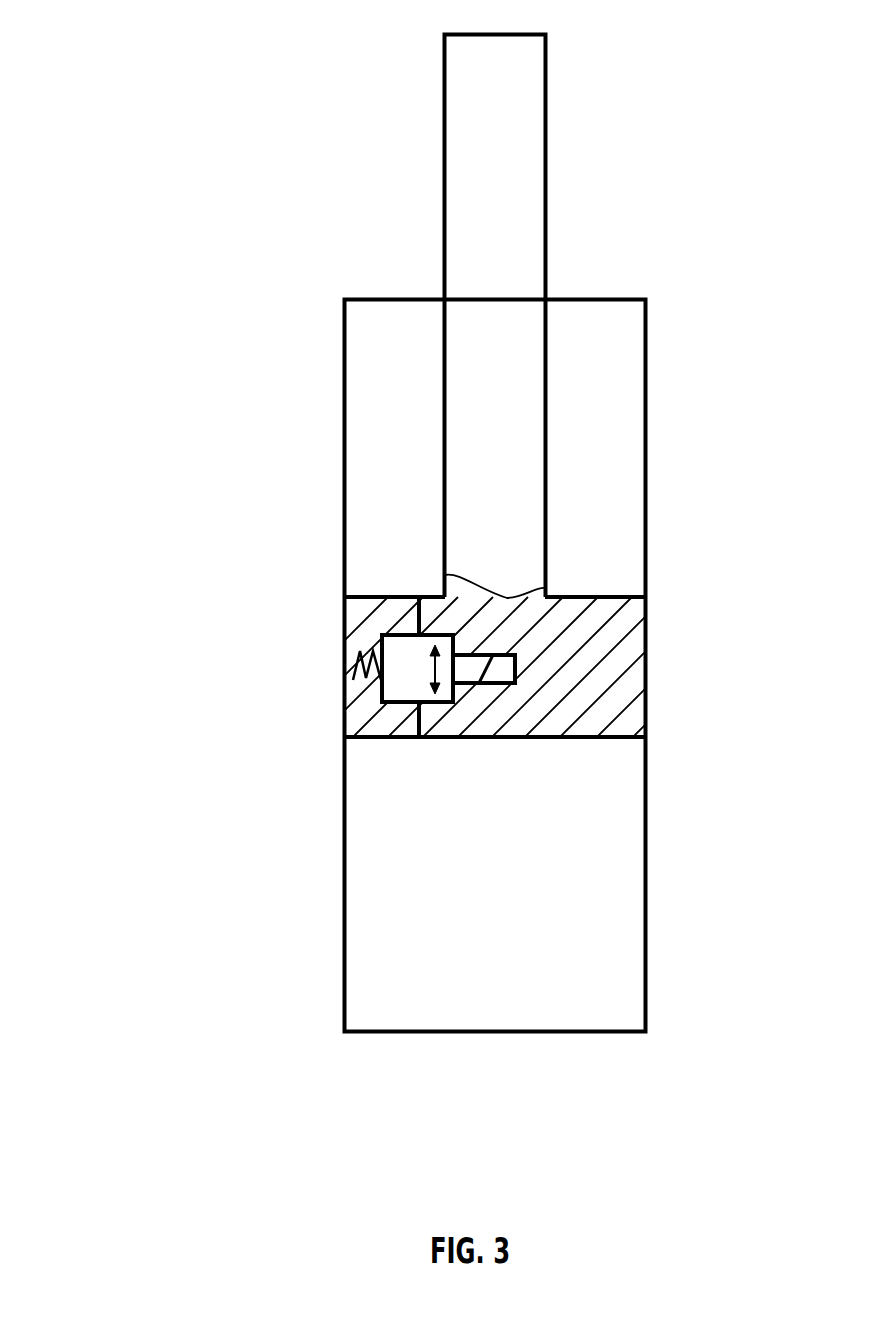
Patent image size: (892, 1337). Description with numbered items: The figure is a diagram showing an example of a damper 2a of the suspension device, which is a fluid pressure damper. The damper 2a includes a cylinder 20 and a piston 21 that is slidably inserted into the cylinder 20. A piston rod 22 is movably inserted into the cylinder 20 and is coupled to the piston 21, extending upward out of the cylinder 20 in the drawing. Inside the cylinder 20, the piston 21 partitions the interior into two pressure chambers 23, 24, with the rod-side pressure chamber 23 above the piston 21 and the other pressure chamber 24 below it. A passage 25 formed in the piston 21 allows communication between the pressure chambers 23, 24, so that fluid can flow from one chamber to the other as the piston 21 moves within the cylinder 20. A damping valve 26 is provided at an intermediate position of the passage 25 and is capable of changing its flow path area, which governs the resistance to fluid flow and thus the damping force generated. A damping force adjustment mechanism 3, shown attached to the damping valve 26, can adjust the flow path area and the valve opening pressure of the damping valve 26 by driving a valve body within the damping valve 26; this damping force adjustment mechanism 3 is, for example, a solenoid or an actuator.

The damper 2a is at (279, 196).
The cylinder 20 is at (646, 407).
The piston 21 is at (646, 650).
The piston rod 22 is at (546, 220).
The pressure chamber 23 is at (612, 452).
The pressure chamber 24 is at (512, 892).
The passage 25 is at (418, 620).
The damping valve 26 is at (375, 702).
The damping force adjustment mechanism 3 is at (515, 668).